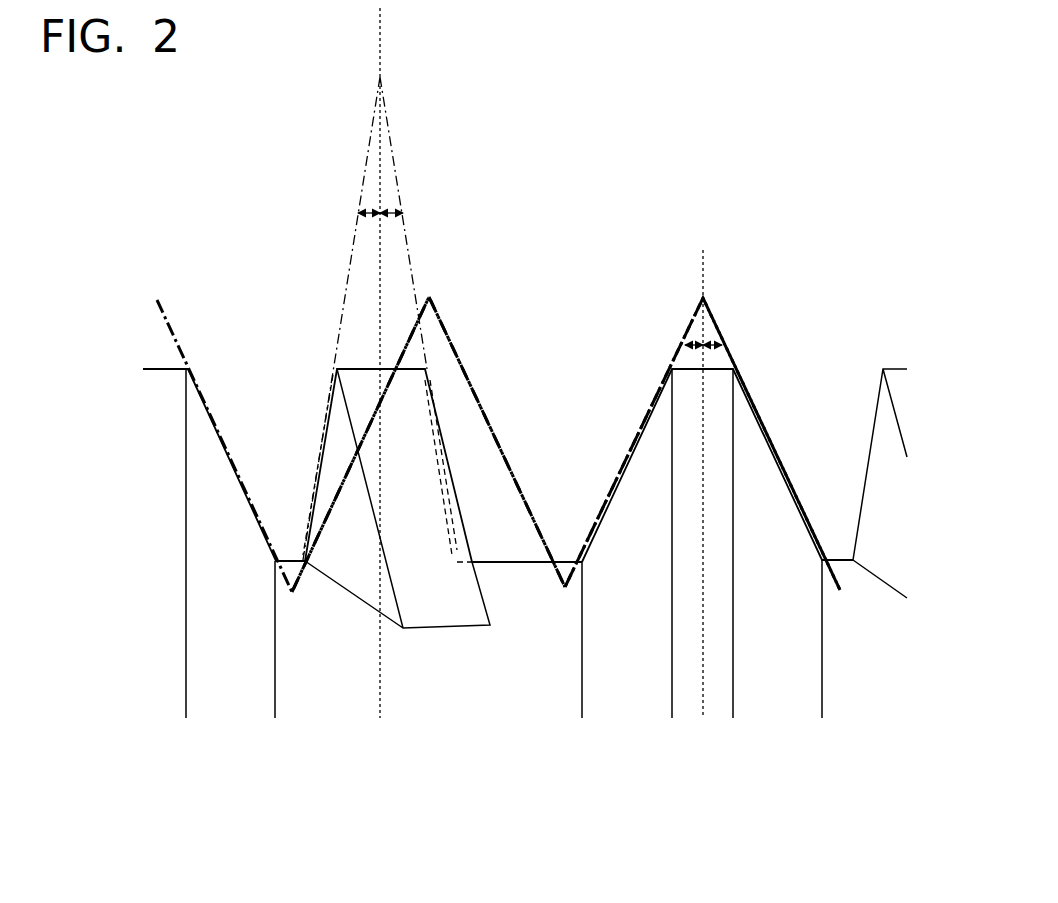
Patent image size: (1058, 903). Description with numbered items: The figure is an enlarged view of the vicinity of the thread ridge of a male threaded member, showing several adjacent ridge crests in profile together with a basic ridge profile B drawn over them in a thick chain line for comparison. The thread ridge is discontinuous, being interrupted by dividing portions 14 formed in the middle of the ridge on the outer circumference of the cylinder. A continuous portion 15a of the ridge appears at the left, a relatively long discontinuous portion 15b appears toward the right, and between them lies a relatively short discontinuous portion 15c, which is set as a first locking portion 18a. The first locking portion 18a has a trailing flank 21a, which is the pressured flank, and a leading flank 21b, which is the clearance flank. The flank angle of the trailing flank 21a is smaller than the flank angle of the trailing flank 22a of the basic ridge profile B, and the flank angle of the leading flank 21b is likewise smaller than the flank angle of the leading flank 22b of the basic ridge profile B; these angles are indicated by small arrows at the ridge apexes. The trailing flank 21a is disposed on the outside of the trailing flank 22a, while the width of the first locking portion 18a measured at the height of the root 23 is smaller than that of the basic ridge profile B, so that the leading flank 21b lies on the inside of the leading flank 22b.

The dividing portion 14 is at (438, 678).
The continuous portion 15a is at (158, 367).
The long discontinuous portion 15b is at (712, 369).
The short discontinuous portion 15c is at (360, 369).
The first locking portion 18a is at (356, 319).
The trailing flank 21a is at (332, 395).
The leading flank 21b is at (443, 492).
The trailing flank of basic ridge profile 22a is at (337, 472).
The leading flank of basic ridge profile 22b is at (473, 386).
The root 23 is at (510, 562).
The basic ridge profile B is at (452, 317).